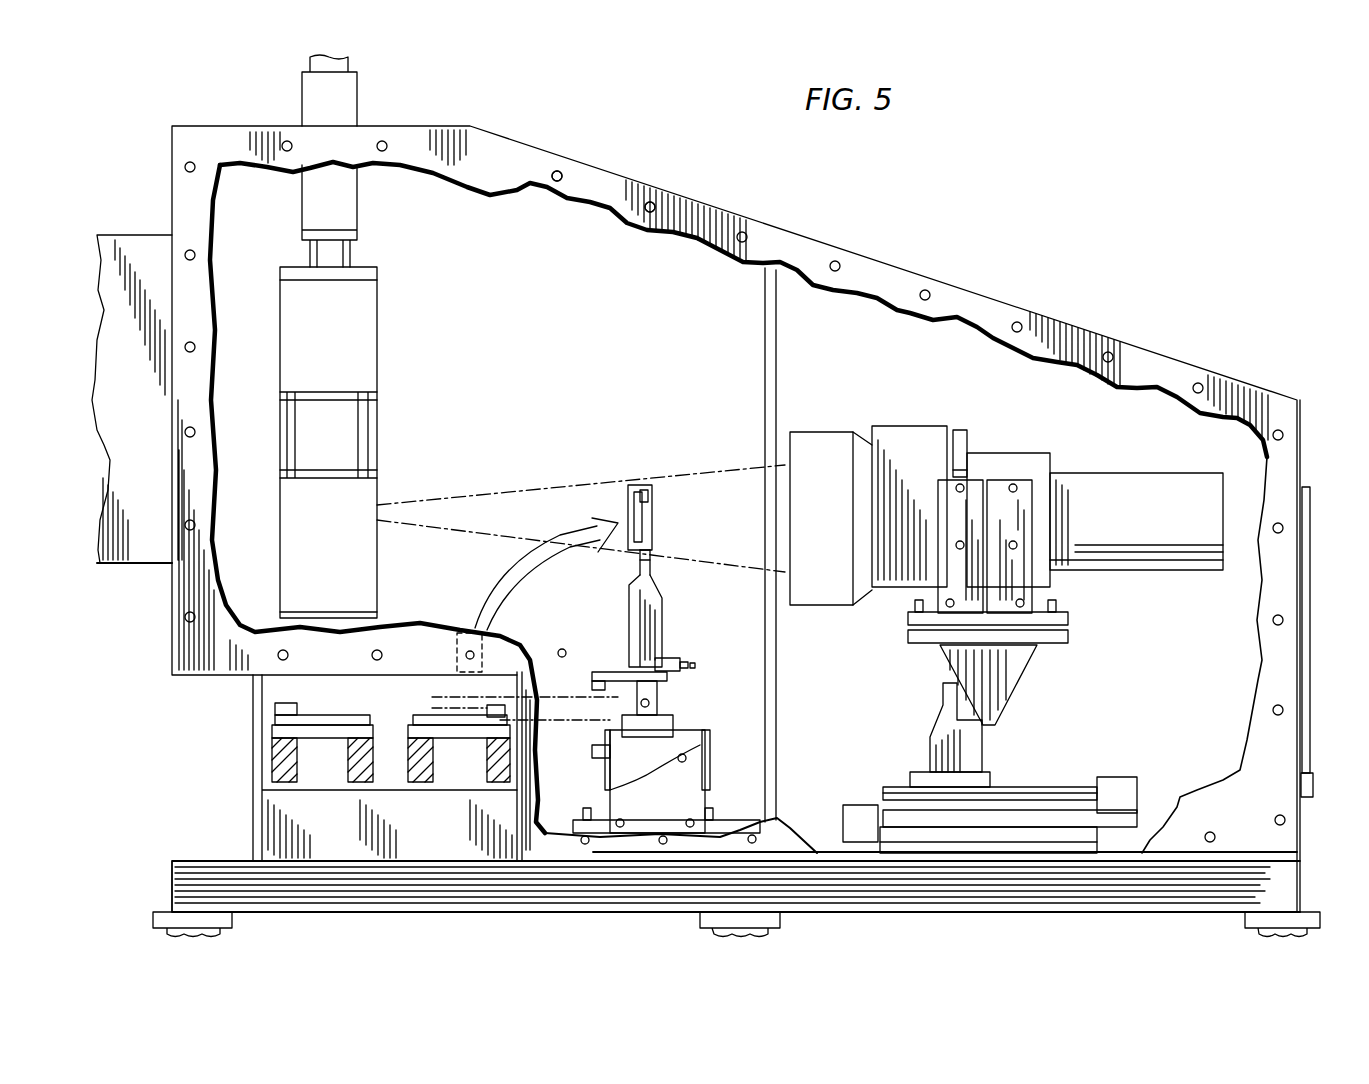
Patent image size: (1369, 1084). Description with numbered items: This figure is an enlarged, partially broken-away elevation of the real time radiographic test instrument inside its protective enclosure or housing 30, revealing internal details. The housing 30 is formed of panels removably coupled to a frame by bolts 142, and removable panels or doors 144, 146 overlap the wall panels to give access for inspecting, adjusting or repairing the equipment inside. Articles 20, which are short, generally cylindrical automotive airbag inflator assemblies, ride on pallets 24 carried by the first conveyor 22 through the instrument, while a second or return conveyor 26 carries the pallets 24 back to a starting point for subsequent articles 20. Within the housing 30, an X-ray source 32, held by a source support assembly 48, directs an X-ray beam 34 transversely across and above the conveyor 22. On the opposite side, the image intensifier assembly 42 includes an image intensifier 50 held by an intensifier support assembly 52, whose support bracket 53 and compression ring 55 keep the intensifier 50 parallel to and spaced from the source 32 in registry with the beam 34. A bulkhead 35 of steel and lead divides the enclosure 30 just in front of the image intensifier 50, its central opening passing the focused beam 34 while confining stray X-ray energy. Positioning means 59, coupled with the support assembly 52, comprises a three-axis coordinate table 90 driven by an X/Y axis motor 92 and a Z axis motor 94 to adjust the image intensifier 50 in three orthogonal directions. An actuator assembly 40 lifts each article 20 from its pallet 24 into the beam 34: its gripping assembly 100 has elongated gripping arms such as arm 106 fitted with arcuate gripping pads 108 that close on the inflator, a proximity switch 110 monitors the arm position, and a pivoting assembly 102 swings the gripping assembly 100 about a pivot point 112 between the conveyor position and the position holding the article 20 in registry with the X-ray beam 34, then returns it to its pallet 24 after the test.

The article 20 is at (645, 483).
The first conveyor 22 is at (487, 784).
The pallet 24 is at (405, 714).
The second or return conveyor 26 is at (350, 784).
The protective enclosure or housing 30 is at (903, 265).
The X-ray source 32 is at (392, 335).
The X-ray beam 34 is at (520, 490).
The bulkhead 35 is at (764, 350).
The actuator assembly 40 is at (586, 605).
The image intensifier assembly 42 is at (1006, 550).
The source support assembly 48 is at (624, 308).
The image intensifier 50 is at (815, 428).
The intensifier support assembly 52 is at (1083, 634).
The support bracket 53 is at (1028, 480).
The compression ring 55 is at (958, 430).
The positioning means 59 is at (992, 768).
The three-axis coordinate table 90 is at (1009, 789).
The X/Y axis motor 92 is at (1138, 778).
The Z axis motor 94 is at (845, 803).
The gripping assembly 100 is at (665, 610).
The pivoting assembly 102 is at (721, 730).
The gripping arm 106 is at (655, 520).
The gripping pad 108 is at (630, 490).
The proximity switch 110 is at (615, 668).
The pivot point 112 is at (655, 703).
The bolt 142 is at (650, 202).
The removable panel or door 144 is at (148, 578).
The removable panel or door 146 is at (1310, 495).